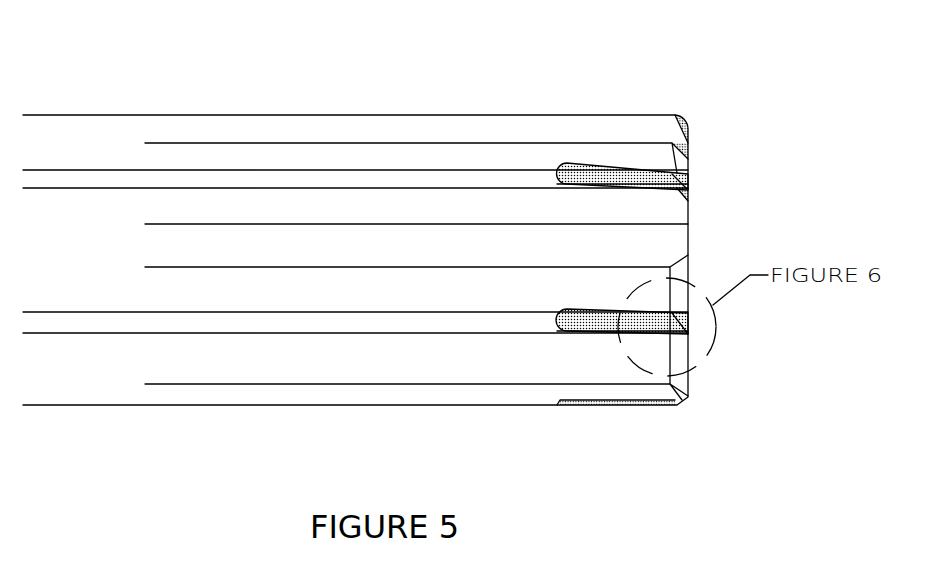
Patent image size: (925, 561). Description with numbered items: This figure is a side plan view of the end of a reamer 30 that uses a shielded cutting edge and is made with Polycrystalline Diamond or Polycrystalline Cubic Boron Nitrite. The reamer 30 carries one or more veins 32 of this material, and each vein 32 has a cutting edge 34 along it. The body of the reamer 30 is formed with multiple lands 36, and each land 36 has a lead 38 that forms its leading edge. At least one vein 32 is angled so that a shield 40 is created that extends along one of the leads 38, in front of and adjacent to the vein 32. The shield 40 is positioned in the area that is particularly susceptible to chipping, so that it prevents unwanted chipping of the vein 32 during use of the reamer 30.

The reamer 30 is at (183, 435).
The vein 32 is at (616, 178).
The cutting edge 34 is at (674, 189).
The land 36 is at (238, 178).
The lead 38 is at (345, 188).
The shield 40 is at (584, 189).